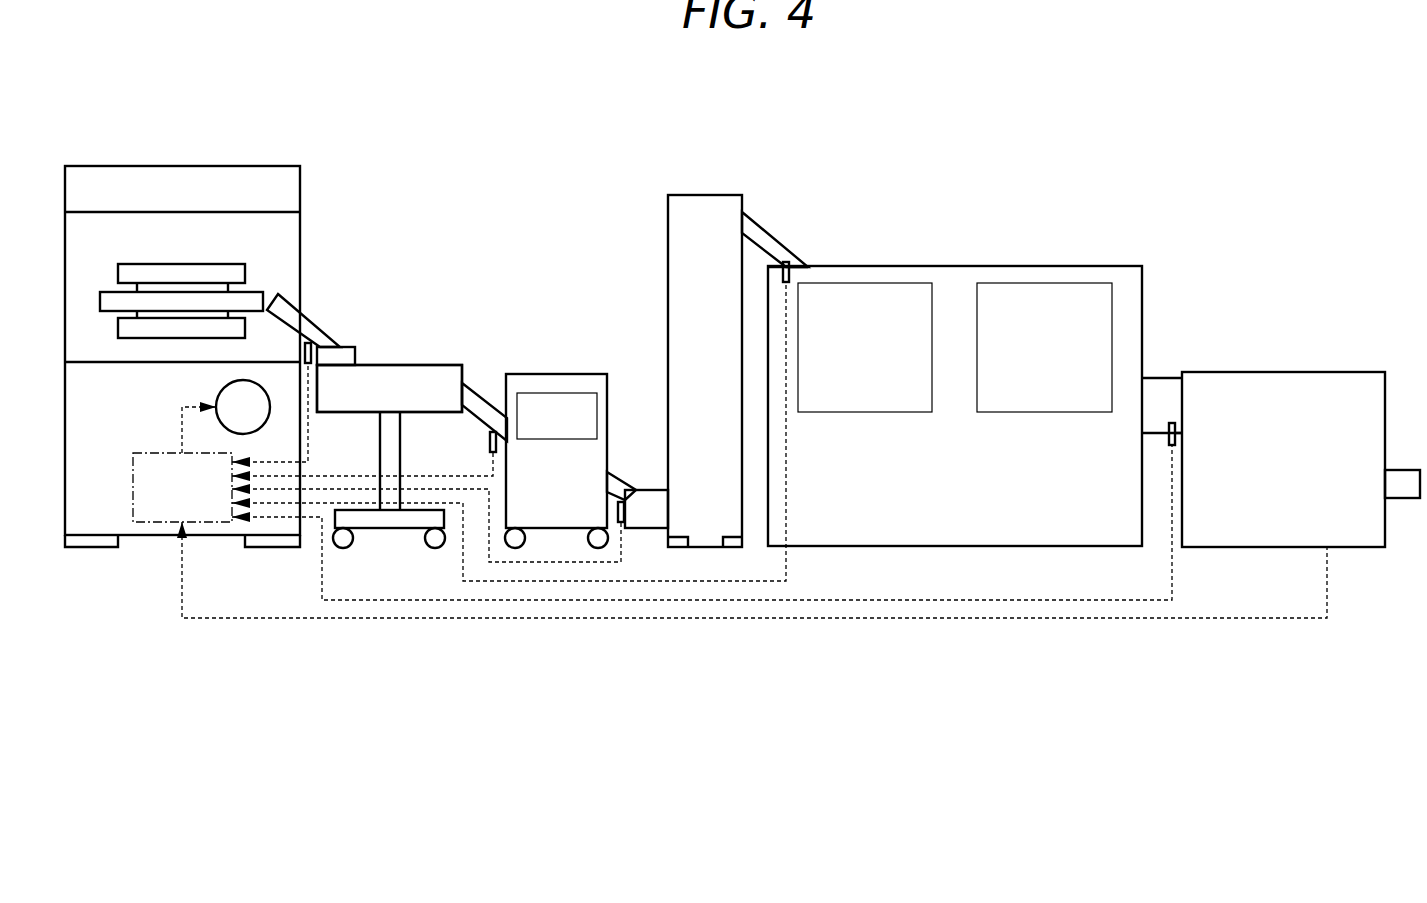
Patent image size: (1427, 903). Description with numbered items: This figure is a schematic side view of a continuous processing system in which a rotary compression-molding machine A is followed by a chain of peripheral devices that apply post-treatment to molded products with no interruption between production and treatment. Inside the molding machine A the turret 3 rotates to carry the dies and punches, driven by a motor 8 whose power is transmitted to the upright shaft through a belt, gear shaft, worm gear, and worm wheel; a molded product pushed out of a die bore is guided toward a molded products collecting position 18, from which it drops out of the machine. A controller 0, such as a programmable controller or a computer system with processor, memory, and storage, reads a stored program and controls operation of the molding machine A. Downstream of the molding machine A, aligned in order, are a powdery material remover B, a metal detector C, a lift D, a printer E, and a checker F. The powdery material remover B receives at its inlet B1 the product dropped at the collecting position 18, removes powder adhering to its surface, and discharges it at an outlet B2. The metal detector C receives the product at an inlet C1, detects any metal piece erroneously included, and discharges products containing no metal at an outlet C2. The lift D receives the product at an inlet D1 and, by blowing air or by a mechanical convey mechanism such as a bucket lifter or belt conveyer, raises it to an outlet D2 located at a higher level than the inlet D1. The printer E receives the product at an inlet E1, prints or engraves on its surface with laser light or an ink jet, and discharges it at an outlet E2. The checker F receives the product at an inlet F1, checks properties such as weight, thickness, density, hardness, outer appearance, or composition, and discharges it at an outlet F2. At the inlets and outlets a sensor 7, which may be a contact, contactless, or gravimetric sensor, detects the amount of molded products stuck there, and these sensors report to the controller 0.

The rotary compression-molding machine A is at (183, 158).
The turret 3 is at (183, 264).
The molded products collecting position 18 is at (268, 300).
The motor 8 is at (216, 396).
The controller 0 is at (133, 487).
The sensor 7 is at (303, 352).
The inlet of powdery material remover B1 is at (338, 347).
The powdery material remover B is at (390, 357).
The outlet of powdery material remover B2 is at (468, 402).
The inlet of metal detector C1 is at (508, 426).
The metal detector C is at (557, 366).
The outlet of metal detector C2 is at (607, 481).
The inlet of lift D1 is at (630, 498).
The lift D is at (705, 187).
The outlet of lift D2 is at (742, 226).
The inlet of printer E1 is at (797, 258).
The printer E is at (953, 258).
The outlet of printer E2 is at (1142, 413).
The inlet of checker F1 is at (1177, 414).
The checker F is at (1283, 364).
The outlet of checker F2 is at (1385, 484).